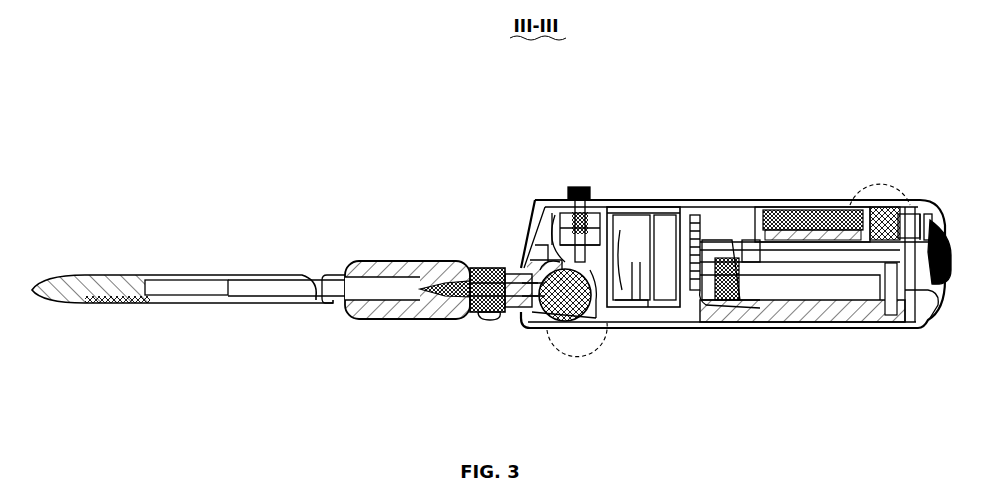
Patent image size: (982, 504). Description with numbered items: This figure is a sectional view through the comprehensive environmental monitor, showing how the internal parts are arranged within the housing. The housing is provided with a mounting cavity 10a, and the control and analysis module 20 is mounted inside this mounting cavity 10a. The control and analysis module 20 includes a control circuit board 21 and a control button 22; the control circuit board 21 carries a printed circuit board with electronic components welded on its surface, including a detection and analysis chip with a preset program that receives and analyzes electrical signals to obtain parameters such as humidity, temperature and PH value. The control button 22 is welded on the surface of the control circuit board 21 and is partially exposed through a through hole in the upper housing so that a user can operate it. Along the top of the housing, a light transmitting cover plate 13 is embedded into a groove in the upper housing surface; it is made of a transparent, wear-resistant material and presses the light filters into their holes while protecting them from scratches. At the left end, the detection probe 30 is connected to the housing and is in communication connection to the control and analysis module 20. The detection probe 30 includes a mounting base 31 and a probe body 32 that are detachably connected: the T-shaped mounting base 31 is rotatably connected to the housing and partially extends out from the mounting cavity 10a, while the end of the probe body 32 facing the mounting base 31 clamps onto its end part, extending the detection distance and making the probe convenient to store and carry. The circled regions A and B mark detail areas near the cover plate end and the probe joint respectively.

The detection probe 30 is at (511, 183).
The probe body 32 is at (397, 277).
The mounting base 31 is at (491, 262).
The control and analysis module 20 is at (741, 144).
The control button 22 is at (586, 187).
The control circuit board 21 is at (730, 200).
The light transmitting cover plate 13 is at (812, 200).
The mounting cavity 10a is at (776, 247).
The detail region A is at (873, 184).
The detail region B is at (590, 338).